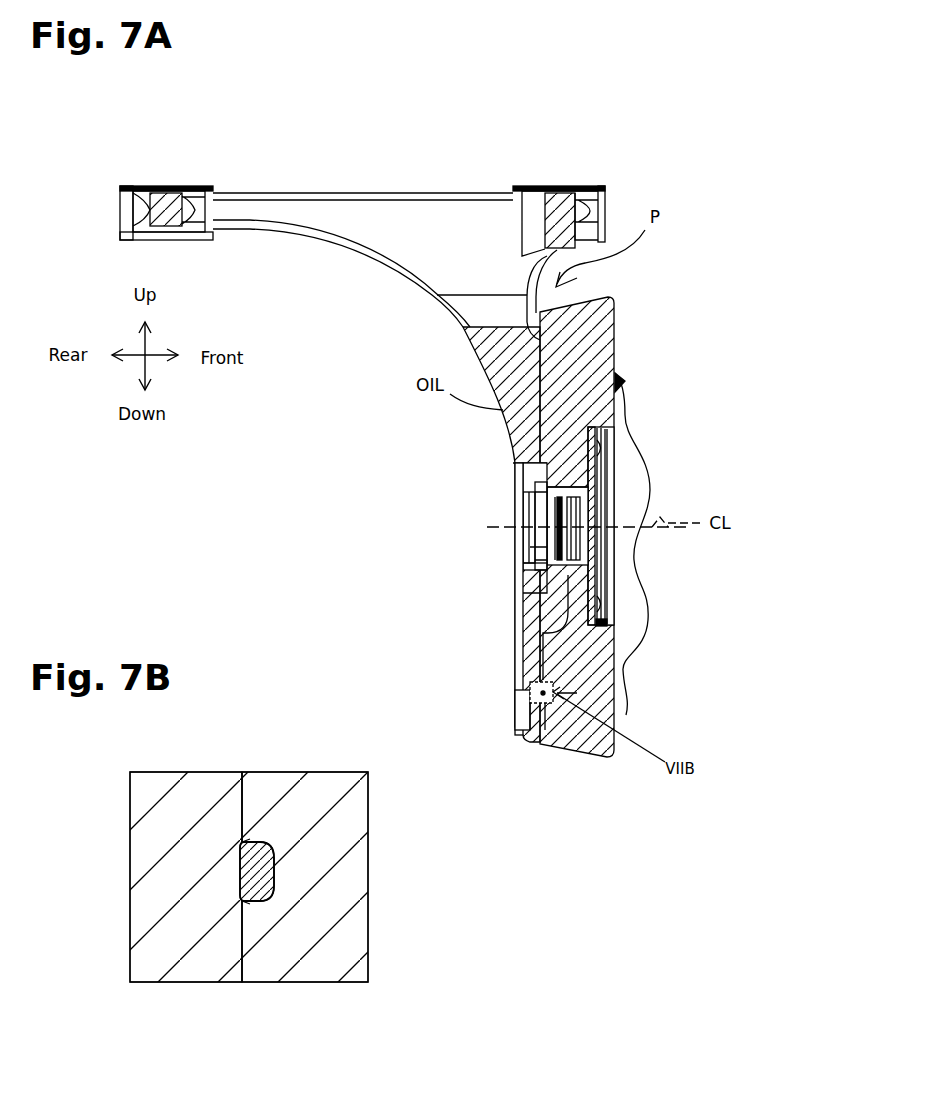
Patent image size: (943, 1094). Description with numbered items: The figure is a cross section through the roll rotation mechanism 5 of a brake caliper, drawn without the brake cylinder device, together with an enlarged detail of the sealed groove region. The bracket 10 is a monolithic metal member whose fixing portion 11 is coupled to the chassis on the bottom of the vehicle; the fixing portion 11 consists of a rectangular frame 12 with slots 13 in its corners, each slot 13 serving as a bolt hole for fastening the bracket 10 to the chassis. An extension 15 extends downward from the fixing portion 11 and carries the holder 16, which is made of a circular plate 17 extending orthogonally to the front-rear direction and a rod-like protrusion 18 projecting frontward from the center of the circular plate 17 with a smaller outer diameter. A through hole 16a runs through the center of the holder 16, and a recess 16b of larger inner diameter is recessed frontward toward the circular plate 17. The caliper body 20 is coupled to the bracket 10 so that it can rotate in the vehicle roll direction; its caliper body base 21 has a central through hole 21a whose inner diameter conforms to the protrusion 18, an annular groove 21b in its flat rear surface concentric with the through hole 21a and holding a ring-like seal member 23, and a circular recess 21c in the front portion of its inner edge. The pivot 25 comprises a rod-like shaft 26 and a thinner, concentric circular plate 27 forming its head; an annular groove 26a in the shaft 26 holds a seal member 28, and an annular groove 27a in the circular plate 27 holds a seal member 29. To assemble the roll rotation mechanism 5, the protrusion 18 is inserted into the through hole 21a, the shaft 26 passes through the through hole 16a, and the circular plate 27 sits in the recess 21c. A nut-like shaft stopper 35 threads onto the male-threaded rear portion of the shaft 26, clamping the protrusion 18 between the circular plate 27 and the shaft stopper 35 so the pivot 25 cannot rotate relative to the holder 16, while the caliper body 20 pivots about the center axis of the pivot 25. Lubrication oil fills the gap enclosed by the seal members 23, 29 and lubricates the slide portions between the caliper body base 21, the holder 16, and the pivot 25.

In FIG. 7A, the roll rotation mechanism 5 is at (650, 433).
In FIG. 7A, the bracket 10 is at (537, 112).
In FIG. 7B, the bracket 10 is at (186, 877).
In FIG. 7A, the fixing portion 11 is at (357, 161).
In FIG. 7A, the frame 12 is at (282, 193).
In FIG. 7A, the slots 13 is at (165, 186).
In FIG. 7A, the extension 15 is at (392, 333).
In FIG. 7A, the holder 16 is at (458, 436).
In FIG. 7B, the holder 16 is at (177, 997).
In FIG. 7A, the through hole 16a is at (515, 563).
In FIG. 7A, the recess 16b is at (515, 587).
In FIG. 7A, the circular plate 17 is at (515, 617).
In FIG. 7A, the protrusion 18 is at (545, 661).
In FIG. 7A, the caliper body 20 is at (617, 316).
In FIG. 7B, the caliper body 20 is at (305, 877).
In FIG. 7A, the caliper body base 21 is at (618, 337).
In FIG. 7B, the caliper body base 21 is at (372, 846).
In FIG. 7A, the through hole 21a is at (518, 432).
In FIG. 7B, the annular groove 21b is at (247, 902).
In FIG. 7A, the recess 21c is at (613, 637).
In FIG. 7B, the seal member 23 is at (245, 866).
In FIG. 7A, the pivot 25 is at (618, 540).
In FIG. 7A, the shaft 26 is at (618, 563).
In FIG. 7A, the annular groove 26a is at (520, 520).
In FIG. 7A, the circular plate 27 is at (618, 500).
In FIG. 7A, the annular groove 27a is at (618, 483).
In FIG. 7A, the seal member 28 is at (520, 503).
In FIG. 7A, the seal member 29 is at (618, 448).
In FIG. 7A, the shaft stopper 35 is at (520, 543).